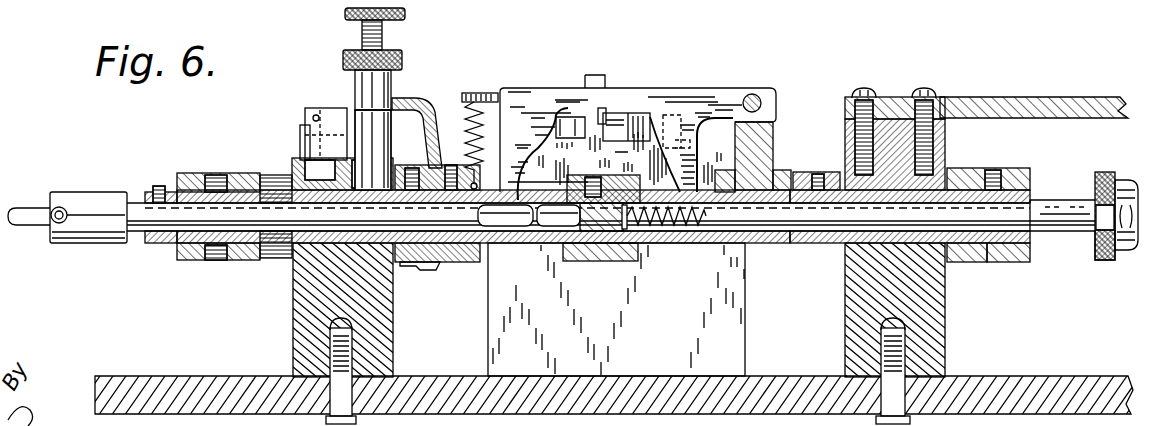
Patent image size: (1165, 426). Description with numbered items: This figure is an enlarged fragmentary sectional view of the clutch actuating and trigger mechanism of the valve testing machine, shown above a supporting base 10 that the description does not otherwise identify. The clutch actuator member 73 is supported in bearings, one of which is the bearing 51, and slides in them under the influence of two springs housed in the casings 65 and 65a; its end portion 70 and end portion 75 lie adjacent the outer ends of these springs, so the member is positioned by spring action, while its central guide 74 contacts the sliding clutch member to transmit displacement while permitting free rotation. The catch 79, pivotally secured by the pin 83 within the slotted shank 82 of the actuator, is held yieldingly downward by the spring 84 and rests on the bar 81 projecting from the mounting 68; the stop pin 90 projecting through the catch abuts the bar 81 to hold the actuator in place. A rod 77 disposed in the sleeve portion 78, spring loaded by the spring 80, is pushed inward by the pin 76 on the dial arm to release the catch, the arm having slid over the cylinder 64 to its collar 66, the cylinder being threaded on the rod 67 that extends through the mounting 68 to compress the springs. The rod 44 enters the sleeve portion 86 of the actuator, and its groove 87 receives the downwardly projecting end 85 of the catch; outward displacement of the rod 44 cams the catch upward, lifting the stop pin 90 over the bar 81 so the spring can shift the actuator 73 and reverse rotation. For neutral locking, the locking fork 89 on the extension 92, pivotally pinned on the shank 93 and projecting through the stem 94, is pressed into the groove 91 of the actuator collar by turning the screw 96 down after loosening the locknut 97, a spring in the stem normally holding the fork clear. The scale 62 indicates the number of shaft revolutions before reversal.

The base plate 10 is at (1011, 375).
The rod 44 is at (26, 208).
The bearing 51 is at (935, 316).
The scale 62 is at (1022, 97).
The cylinder 64 is at (1121, 180).
The casing 65 is at (279, 172).
The casing 65a is at (805, 172).
The collar 66 is at (1095, 178).
The rod 67 is at (1067, 232).
The mounting 68 is at (733, 328).
The end portion 70 is at (186, 261).
The clutch actuator member 73 is at (480, 247).
The guide 74 is at (597, 262).
The end portion 75 is at (1012, 262).
The pin 76 is at (1097, 256).
The rod 77 is at (1004, 206).
The sleeve portion 78 is at (978, 262).
The catch 79 is at (665, 92).
The spring 80 is at (673, 232).
The bar 81 is at (615, 113).
The slotted shank 82 is at (777, 124).
The pin 83 is at (752, 94).
The spring 84 is at (466, 98).
The downwardly projecting end 85 is at (524, 166).
The sleeve portion 86 is at (272, 261).
The groove 87 is at (492, 206).
The locking fork 89 is at (413, 100).
The stop pin 90 is at (84, 200).
The groove 91 is at (416, 271).
The extension 92 is at (355, 108).
The shank 93 is at (305, 110).
The stem 94 is at (392, 80).
The screw 96 is at (345, 14).
The locknut 97 is at (270, 307).